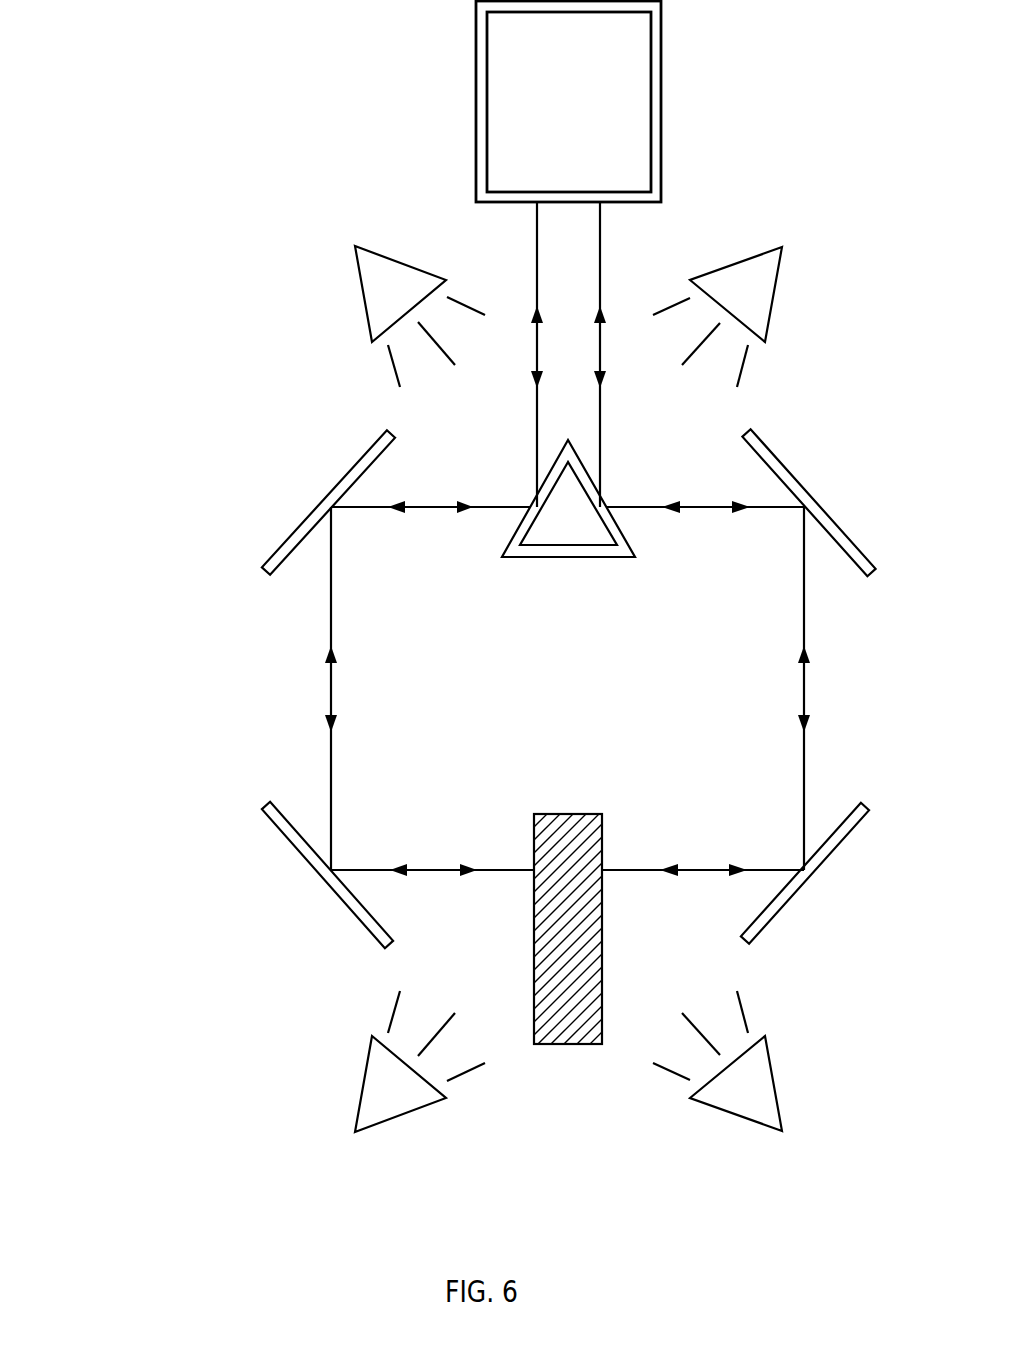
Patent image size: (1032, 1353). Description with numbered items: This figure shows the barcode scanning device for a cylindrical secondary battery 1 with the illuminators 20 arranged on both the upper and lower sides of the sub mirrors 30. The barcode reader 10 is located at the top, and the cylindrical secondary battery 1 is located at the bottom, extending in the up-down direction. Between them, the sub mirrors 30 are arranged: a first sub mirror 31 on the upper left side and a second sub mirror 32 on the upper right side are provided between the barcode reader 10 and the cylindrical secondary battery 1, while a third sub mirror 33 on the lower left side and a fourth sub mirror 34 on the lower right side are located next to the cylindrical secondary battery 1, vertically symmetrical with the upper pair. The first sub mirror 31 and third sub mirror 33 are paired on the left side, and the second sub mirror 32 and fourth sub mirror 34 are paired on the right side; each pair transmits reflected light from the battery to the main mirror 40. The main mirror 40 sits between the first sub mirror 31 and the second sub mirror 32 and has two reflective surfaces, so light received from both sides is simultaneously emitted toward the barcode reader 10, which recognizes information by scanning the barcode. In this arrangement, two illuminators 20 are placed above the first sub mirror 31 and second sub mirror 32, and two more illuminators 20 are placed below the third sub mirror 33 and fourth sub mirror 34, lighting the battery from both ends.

The cylindrical secondary battery 1 is at (550, 910).
The barcode reader 10 is at (610, 97).
The illuminator 20 is at (747, 277).
The sub mirrors 30 is at (118, 514).
The first sub mirror 31 is at (338, 482).
The second sub mirror 32 is at (800, 480).
The third sub mirror 33 is at (337, 897).
The fourth sub mirror 34 is at (797, 895).
The main mirror 40 is at (568, 517).